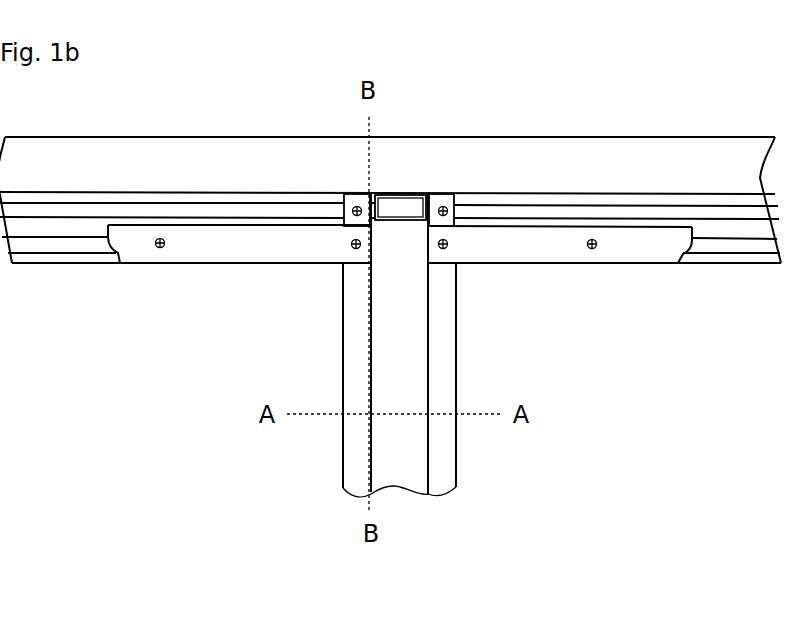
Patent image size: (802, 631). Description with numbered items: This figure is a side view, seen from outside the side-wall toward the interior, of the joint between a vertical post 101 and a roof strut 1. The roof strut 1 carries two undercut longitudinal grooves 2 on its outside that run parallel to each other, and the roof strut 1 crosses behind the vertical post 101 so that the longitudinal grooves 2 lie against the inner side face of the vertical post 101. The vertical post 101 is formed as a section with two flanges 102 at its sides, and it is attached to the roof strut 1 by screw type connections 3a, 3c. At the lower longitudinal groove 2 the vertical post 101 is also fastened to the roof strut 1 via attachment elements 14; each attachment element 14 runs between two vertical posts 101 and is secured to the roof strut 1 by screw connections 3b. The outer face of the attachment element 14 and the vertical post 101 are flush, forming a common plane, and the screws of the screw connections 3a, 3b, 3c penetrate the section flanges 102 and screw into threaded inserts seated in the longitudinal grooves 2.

The roof strut 1 is at (137, 158).
The longitudinal groove 2 is at (45, 208).
The screw type connection 3a is at (352, 245).
The screw connection 3b is at (156, 243).
The screw type connection 3c is at (357, 207).
The attachment element 14 is at (237, 240).
The vertical post 101 is at (403, 295).
The flange 102 is at (362, 458).